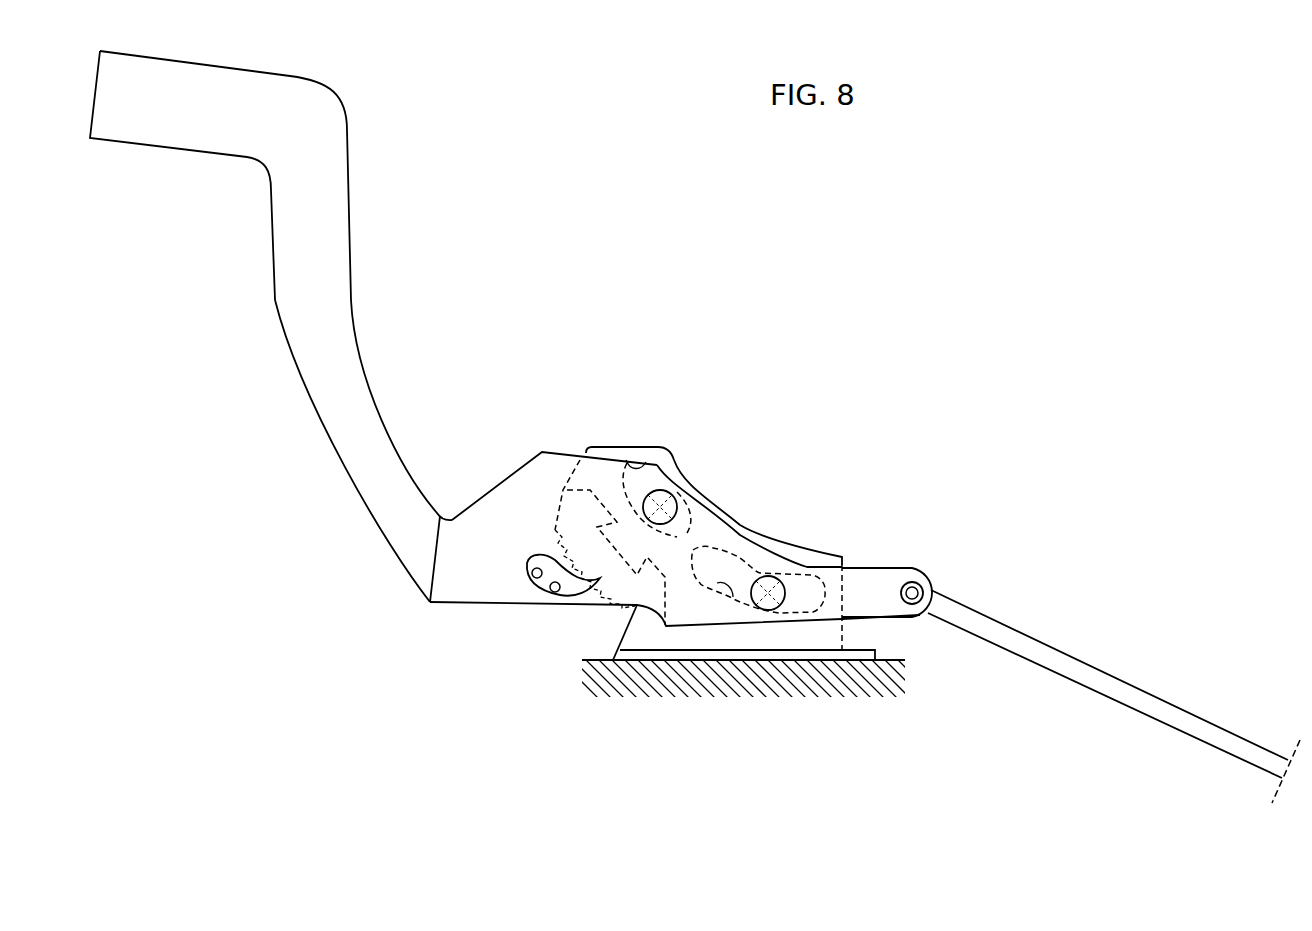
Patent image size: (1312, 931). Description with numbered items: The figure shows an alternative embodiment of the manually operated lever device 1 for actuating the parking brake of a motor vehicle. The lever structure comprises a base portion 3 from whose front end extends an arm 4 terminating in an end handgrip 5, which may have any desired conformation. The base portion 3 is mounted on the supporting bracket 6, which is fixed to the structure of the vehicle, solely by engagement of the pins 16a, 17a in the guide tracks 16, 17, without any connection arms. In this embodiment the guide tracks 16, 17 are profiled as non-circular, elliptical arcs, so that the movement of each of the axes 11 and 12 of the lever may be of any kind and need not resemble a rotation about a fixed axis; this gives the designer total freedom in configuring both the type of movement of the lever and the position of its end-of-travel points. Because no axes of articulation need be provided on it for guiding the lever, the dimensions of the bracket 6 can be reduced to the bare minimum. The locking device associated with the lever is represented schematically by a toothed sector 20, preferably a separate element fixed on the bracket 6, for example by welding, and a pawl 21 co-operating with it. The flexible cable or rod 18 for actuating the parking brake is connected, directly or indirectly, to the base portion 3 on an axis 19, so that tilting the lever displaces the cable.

The lever device 1 is at (529, 190).
The base portion 3 is at (482, 518).
The arm 4 is at (330, 415).
The handgrip 5 is at (302, 102).
The supporting bracket 6 is at (815, 544).
The axis 11 is at (757, 572).
The axis 12 is at (616, 557).
The guide track 16 is at (730, 584).
The pin 16a is at (758, 605).
The guide track 17 is at (630, 462).
The pin 17a is at (673, 503).
The flexible cable or rod 18 is at (1040, 634).
The axis 19 is at (914, 587).
The toothed sector 20 is at (607, 593).
The pawl 21 is at (570, 590).